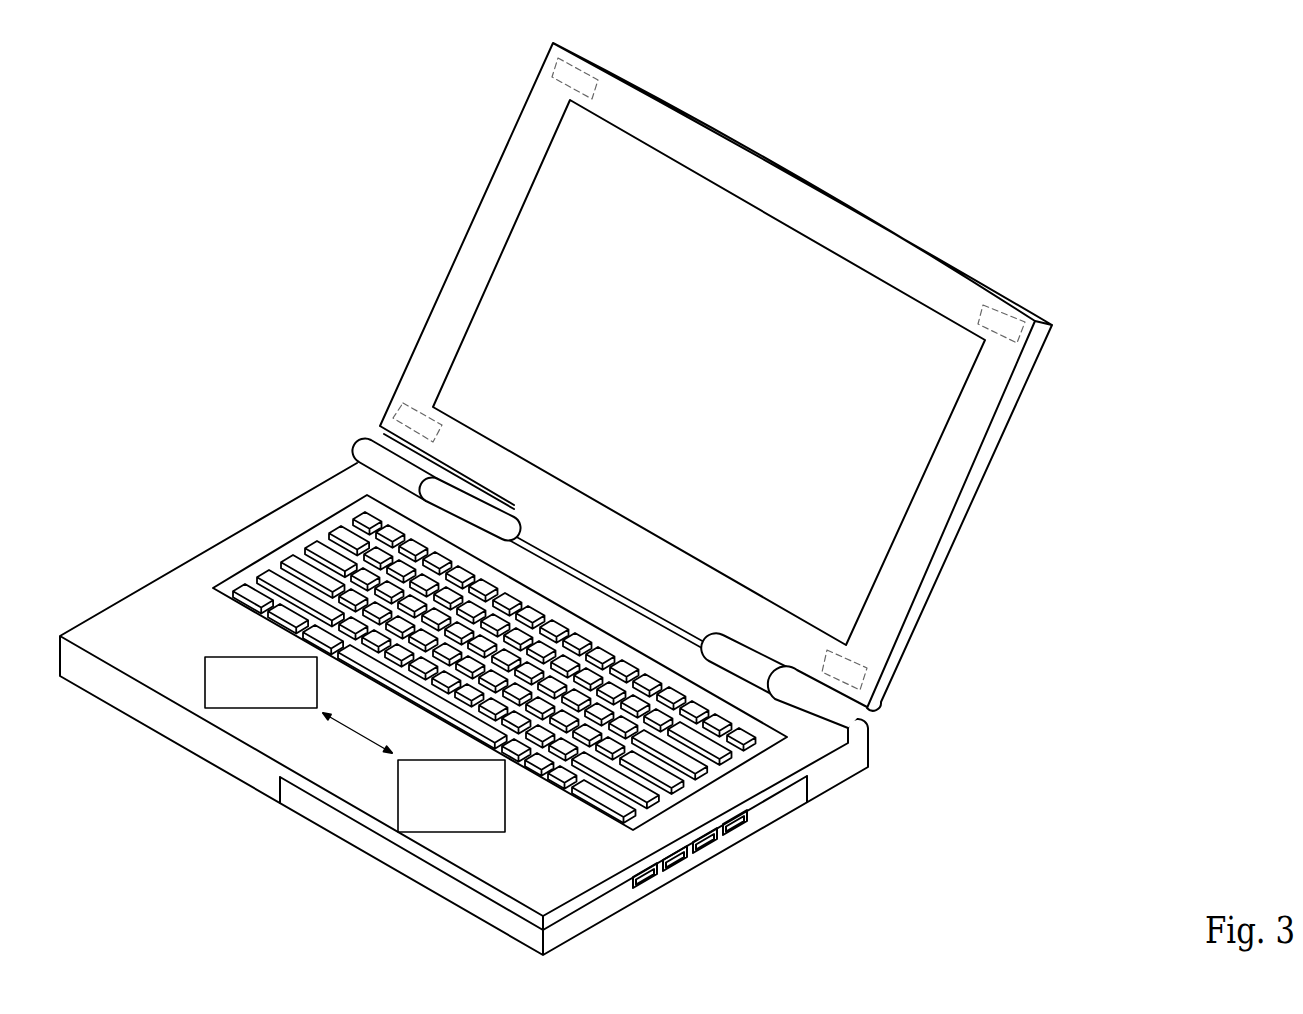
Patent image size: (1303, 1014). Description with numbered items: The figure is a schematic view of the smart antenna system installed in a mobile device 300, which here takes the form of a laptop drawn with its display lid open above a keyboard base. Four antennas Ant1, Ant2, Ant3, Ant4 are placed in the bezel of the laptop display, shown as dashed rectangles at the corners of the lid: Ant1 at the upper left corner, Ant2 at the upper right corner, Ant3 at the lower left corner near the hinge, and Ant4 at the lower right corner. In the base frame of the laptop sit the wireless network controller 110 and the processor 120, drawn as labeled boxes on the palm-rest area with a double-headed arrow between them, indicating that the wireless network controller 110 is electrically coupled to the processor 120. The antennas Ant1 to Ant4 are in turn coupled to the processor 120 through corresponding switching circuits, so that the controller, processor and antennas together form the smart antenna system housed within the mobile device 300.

The antenna Ant1 is at (562, 68).
The antenna Ant2 is at (1023, 332).
The antenna Ant3 is at (403, 407).
The antenna Ant4 is at (860, 677).
The mobile device 300 is at (975, 498).
The processor 120 is at (238, 710).
The wireless network controller 110 is at (460, 833).